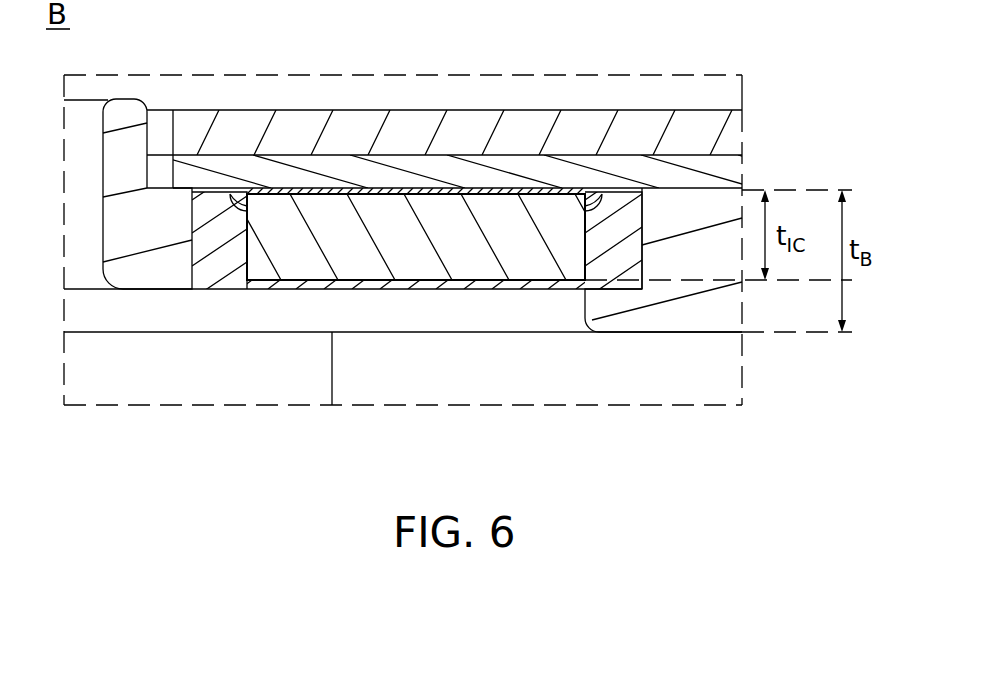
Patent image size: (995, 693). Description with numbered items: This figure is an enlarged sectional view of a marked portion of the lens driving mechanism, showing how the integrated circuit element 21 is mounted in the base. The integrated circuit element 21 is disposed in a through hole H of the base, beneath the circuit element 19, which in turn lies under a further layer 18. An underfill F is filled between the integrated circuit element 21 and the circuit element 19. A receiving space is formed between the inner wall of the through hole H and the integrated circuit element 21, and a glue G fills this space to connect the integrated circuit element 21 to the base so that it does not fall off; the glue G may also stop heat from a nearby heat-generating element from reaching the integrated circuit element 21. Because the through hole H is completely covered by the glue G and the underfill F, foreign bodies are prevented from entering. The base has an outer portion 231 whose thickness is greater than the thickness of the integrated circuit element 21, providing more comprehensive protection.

The cover layer 18 is at (353, 135).
The circuit element 19 is at (473, 173).
The integrated circuit element 21 is at (403, 238).
The outer portion 231 is at (692, 272).
The glue G is at (220, 255).
The through hole H is at (228, 198).
The underfill F is at (247, 193).